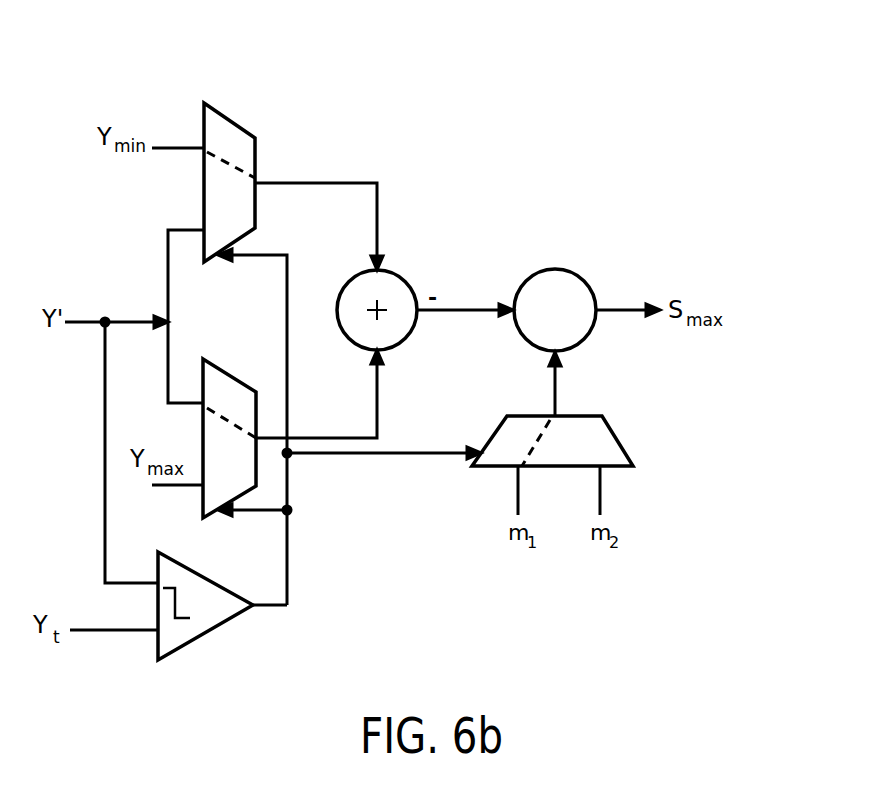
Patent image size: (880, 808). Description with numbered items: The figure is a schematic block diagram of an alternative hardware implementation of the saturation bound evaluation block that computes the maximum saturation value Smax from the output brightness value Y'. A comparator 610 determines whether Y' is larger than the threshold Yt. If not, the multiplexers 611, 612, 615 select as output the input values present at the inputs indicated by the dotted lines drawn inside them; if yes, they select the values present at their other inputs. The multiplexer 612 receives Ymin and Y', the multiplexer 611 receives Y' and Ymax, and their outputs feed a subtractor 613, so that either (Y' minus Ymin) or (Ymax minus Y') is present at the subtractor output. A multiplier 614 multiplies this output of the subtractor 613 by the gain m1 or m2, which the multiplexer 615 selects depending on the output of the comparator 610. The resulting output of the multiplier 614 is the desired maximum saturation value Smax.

The comparator 610 is at (197, 630).
The multiplexer 611 is at (232, 392).
The multiplexer 612 is at (232, 140).
The subtractor 613 is at (395, 285).
The multiplier 614 is at (570, 285).
The multiplexer 615 is at (602, 440).